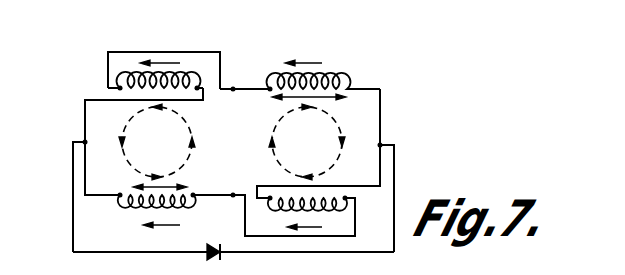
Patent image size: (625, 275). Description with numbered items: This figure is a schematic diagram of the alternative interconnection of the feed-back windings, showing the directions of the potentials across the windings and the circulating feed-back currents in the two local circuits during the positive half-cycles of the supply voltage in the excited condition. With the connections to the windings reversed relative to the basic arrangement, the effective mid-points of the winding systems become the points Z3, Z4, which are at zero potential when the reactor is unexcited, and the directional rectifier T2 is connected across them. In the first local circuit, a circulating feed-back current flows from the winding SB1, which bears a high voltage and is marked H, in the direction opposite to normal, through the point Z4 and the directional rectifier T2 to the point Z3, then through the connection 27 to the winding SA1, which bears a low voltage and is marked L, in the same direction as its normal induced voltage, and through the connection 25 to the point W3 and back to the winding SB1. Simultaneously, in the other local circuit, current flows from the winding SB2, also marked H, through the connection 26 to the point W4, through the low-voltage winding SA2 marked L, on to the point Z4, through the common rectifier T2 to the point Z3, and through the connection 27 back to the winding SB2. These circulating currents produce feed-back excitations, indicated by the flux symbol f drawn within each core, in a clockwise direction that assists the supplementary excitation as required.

The connection 25 is at (210, 52).
The connection 26 is at (381, 100).
The connection 27 is at (85, 119).
The point Z3 is at (83, 143).
The point Z4 is at (383, 144).
The point W3 is at (246, 79).
The point W4 is at (270, 187).
The winding SA1 is at (108, 82).
The winding SB1 is at (347, 79).
The winding SA2 is at (338, 208).
The winding SB2 is at (122, 207).
The high voltage marking H is at (238, 143).
The low voltage marking L is at (231, 148).
The flux f is at (232, 142).
The directional rectifier T2 is at (222, 258).